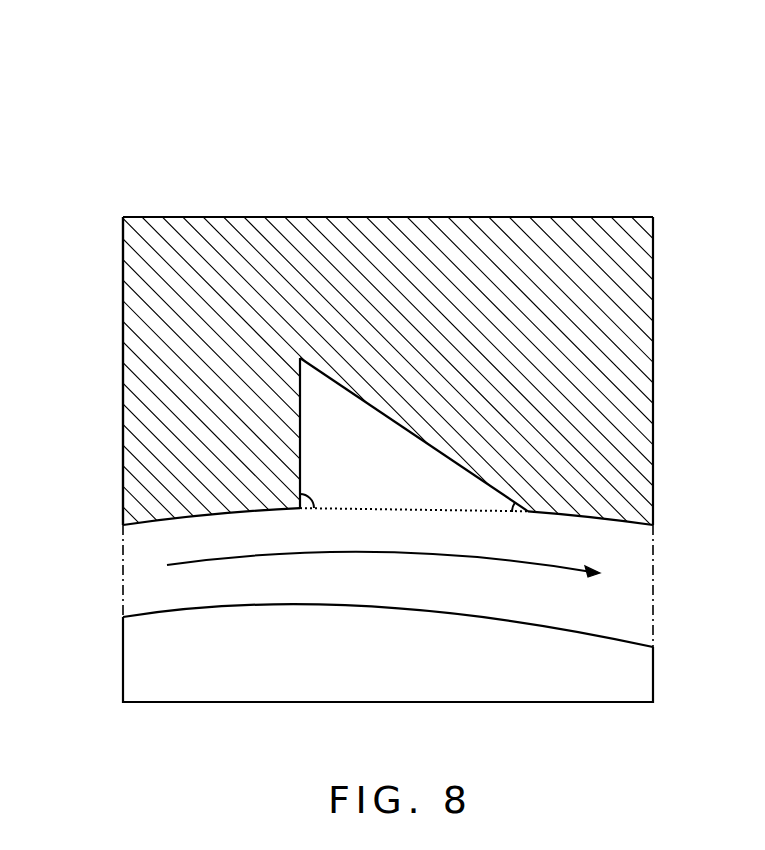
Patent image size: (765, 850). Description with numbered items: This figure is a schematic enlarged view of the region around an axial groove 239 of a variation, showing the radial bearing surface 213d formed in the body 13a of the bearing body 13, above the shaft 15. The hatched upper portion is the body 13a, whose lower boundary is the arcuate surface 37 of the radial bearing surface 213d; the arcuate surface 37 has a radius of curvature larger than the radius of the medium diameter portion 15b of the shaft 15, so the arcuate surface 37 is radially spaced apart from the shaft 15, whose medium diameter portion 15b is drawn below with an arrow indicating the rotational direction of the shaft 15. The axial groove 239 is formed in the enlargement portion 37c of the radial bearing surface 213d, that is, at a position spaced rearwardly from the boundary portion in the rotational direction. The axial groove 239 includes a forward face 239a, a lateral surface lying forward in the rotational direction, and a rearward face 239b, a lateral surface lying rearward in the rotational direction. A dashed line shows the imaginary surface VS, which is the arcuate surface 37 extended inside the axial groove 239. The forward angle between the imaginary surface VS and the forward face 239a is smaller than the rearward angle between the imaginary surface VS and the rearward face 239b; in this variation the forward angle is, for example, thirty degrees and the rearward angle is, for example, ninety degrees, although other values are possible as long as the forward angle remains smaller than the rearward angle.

The body 13 is at (380, 74).
The body 13a is at (123, 330).
The radial bearing surface 213d is at (158, 516).
The arcuate surface 37 is at (207, 511).
The rearward face 239b is at (298, 432).
The imaginary surface VS is at (352, 507).
The axial groove 239 is at (413, 422).
The forward face 239a is at (440, 447).
The enlargement portion 37c is at (593, 519).
The medium diameter portion 15b is at (123, 667).
The shaft 15 is at (123, 685).